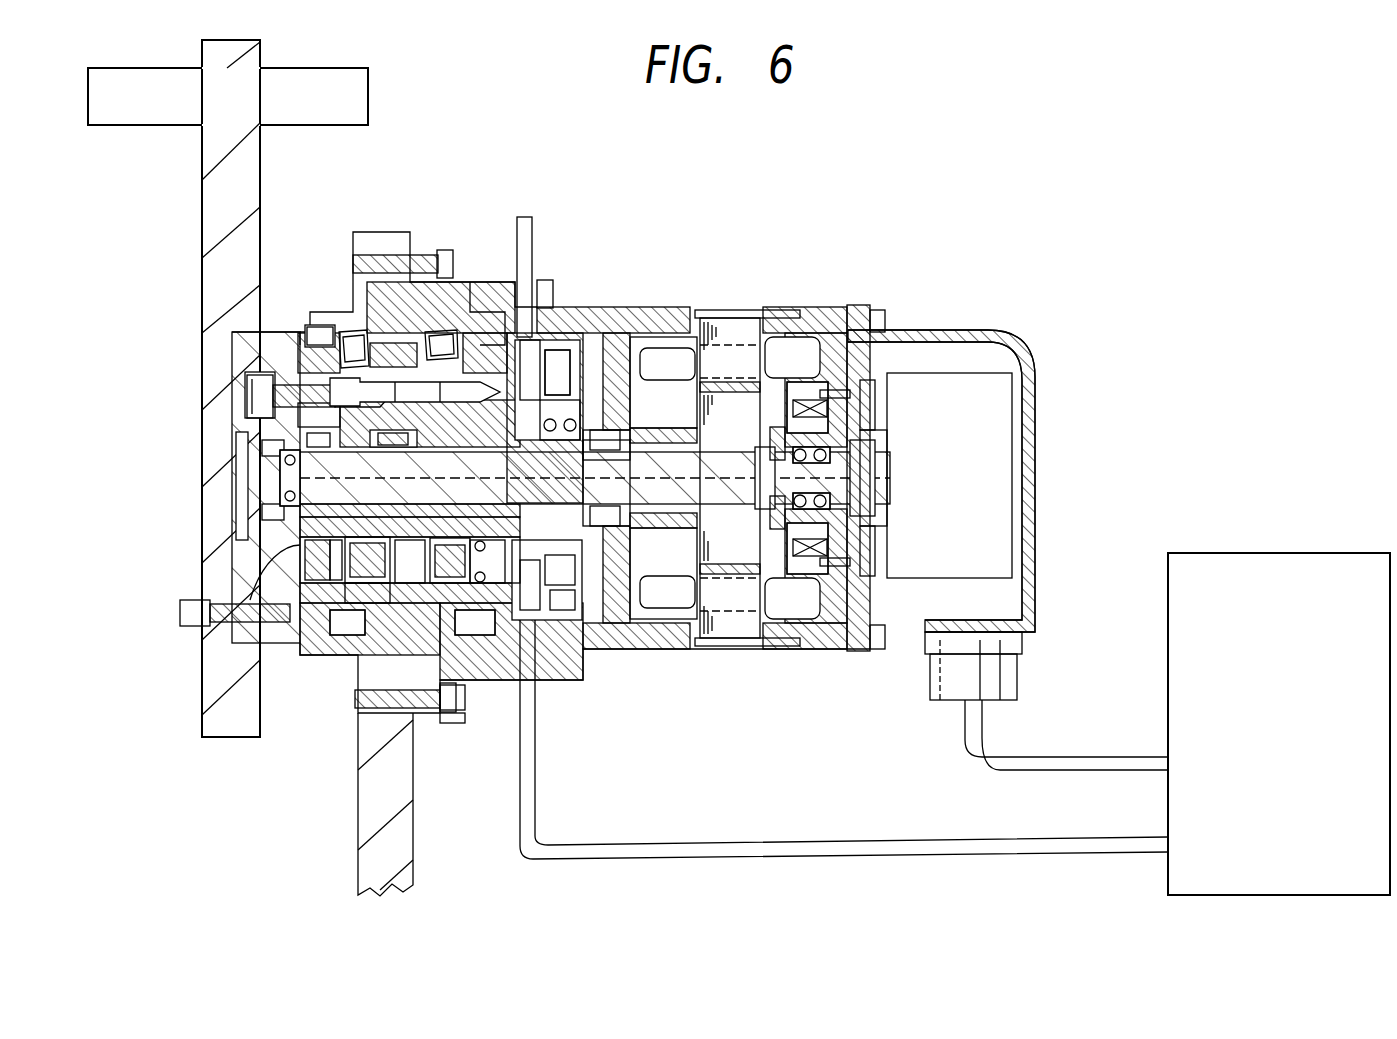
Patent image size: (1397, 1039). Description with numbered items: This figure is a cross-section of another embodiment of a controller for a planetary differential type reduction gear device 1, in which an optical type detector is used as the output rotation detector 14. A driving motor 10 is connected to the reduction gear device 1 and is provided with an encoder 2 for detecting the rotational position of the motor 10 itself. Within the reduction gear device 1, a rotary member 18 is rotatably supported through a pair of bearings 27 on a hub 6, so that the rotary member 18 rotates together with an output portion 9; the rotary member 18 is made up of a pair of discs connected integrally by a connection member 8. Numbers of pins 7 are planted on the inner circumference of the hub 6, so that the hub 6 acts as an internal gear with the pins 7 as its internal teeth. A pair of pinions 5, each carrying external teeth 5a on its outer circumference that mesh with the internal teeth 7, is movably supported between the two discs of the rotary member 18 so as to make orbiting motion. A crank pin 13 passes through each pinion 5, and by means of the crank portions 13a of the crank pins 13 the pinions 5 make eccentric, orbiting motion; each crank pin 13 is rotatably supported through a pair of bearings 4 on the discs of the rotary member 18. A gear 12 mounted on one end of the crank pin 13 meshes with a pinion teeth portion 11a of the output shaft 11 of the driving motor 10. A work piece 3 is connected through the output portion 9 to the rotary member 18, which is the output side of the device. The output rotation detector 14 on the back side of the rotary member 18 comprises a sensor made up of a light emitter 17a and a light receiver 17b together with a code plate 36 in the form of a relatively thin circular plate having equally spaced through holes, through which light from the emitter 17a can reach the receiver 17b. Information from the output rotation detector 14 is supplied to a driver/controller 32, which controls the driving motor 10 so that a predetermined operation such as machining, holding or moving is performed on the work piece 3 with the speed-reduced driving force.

The planetary differential type reduction gear device 1 is at (482, 270).
The encoder 2 is at (995, 418).
The work piece 3 is at (210, 549).
The bearings 4 is at (340, 638).
The pinions 5 is at (422, 700).
The external teeth 5a is at (360, 650).
The hub 6 is at (468, 283).
The pins 7 is at (378, 262).
The connection member 8 is at (258, 395).
The output portion 9 is at (232, 345).
The driving motor 10 is at (745, 290).
The output shaft 11 is at (287, 487).
The pinion teeth portion 11a is at (283, 457).
The gear 12 is at (300, 620).
The crank pin 13 is at (245, 630).
The crank portions 13a is at (460, 700).
The output rotation detector 14 is at (578, 292).
The light emitter 17a is at (545, 330).
The light receiver 17b is at (598, 333).
The rotary member 18 is at (303, 336).
The bearings 27 is at (340, 330).
The driver/controller 32 is at (1278, 552).
The code plate 36 is at (612, 392).